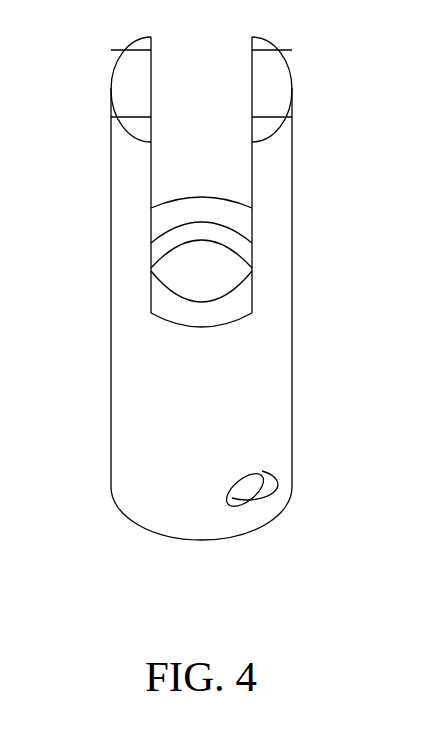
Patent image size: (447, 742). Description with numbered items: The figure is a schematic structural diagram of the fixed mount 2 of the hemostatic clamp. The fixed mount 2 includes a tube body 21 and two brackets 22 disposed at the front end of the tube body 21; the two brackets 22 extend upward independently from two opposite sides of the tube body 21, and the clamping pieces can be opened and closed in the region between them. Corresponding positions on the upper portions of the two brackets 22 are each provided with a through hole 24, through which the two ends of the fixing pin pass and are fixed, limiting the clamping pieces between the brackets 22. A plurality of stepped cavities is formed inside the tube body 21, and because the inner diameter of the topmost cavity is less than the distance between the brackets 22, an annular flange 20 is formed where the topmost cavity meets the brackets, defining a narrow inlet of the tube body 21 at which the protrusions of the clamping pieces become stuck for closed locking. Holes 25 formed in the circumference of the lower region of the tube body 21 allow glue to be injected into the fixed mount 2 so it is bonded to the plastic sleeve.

The fixed mount 2 is at (207, 296).
The annular flange 20 is at (235, 292).
The tube body 21 is at (273, 384).
The bracket 22 is at (273, 202).
The through hole 24 is at (292, 110).
The hole 25 is at (253, 488).